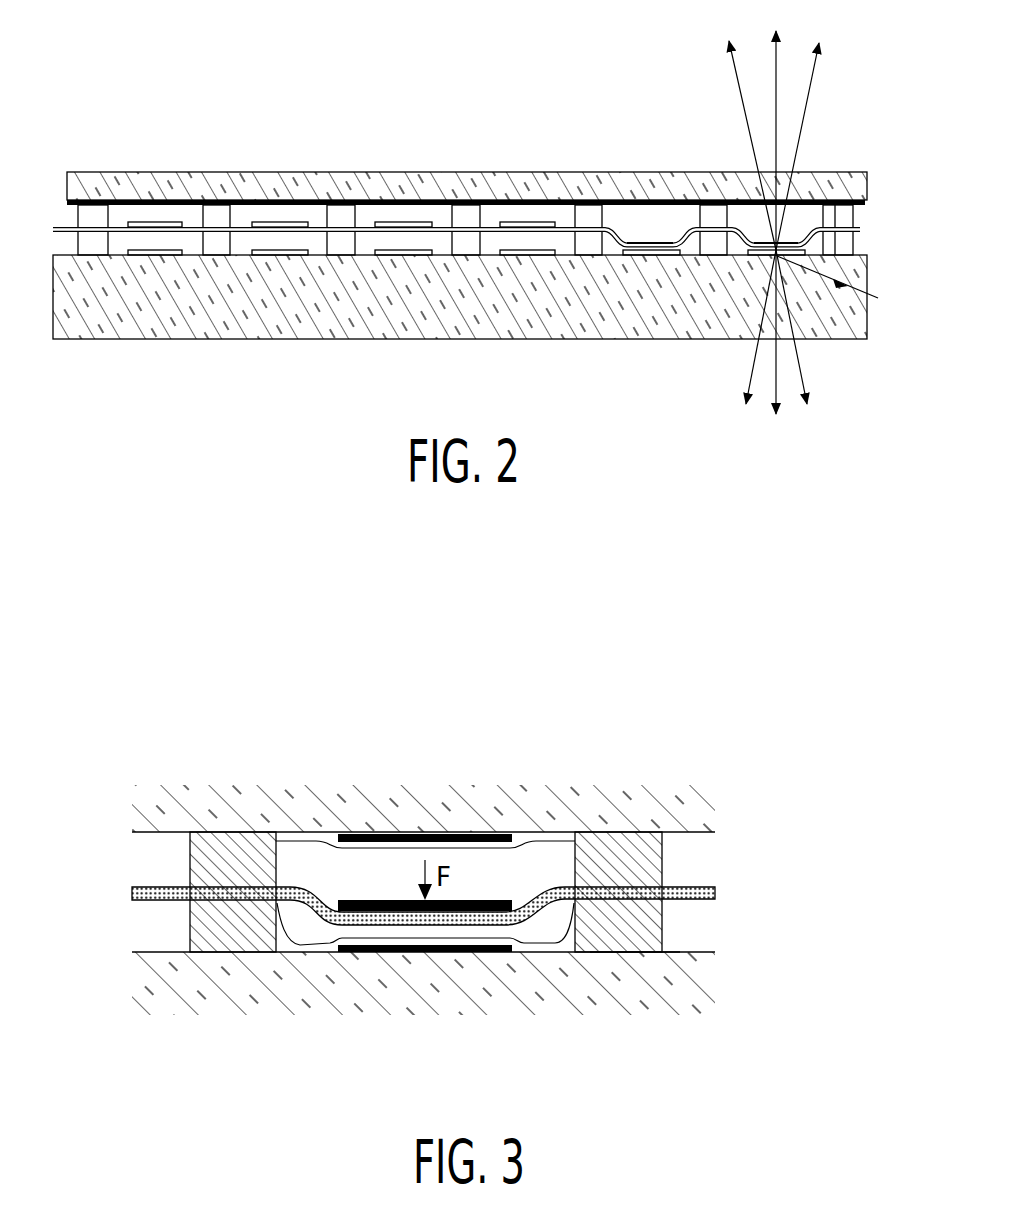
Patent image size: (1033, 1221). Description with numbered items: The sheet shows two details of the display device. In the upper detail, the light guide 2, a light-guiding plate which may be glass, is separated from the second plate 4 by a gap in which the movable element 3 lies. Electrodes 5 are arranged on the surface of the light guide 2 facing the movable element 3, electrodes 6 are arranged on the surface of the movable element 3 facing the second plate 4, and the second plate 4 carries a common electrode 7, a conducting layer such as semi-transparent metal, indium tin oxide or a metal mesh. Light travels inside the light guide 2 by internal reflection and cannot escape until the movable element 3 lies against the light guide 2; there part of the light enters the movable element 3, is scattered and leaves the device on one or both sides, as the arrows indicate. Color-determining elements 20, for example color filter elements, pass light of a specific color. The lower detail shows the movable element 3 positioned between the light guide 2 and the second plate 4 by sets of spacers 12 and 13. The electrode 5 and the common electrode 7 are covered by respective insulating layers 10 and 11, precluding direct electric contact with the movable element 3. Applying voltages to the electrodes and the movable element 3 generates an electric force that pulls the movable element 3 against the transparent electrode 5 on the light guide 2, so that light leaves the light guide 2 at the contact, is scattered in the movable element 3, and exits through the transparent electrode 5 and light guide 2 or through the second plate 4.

In FIG. 2, the light guide 2 is at (148, 322).
In FIG. 3, the light guide 2 is at (262, 1003).
In FIG. 2, the movable element 3 is at (842, 170).
In FIG. 3, the movable element 3 is at (693, 883).
In FIG. 2, the second plate 4 is at (296, 185).
In FIG. 3, the second plate 4 is at (235, 808).
In FIG. 2, the electrode 5 is at (282, 258).
In FIG. 3, the electrode 5 is at (372, 955).
In FIG. 2, the electrode 6 is at (405, 216).
In FIG. 3, the electrode 6 is at (466, 917).
In FIG. 2, the common electrode 7 is at (811, 170).
In FIG. 3, the common electrode 7 is at (356, 828).
In FIG. 3, the insulating layer 10 is at (531, 950).
In FIG. 3, the insulating layer 11 is at (528, 835).
In FIG. 3, the spacer 12 is at (613, 850).
In FIG. 3, the spacer 13 is at (628, 960).
In FIG. 2, the color-determining element 20 is at (745, 168).